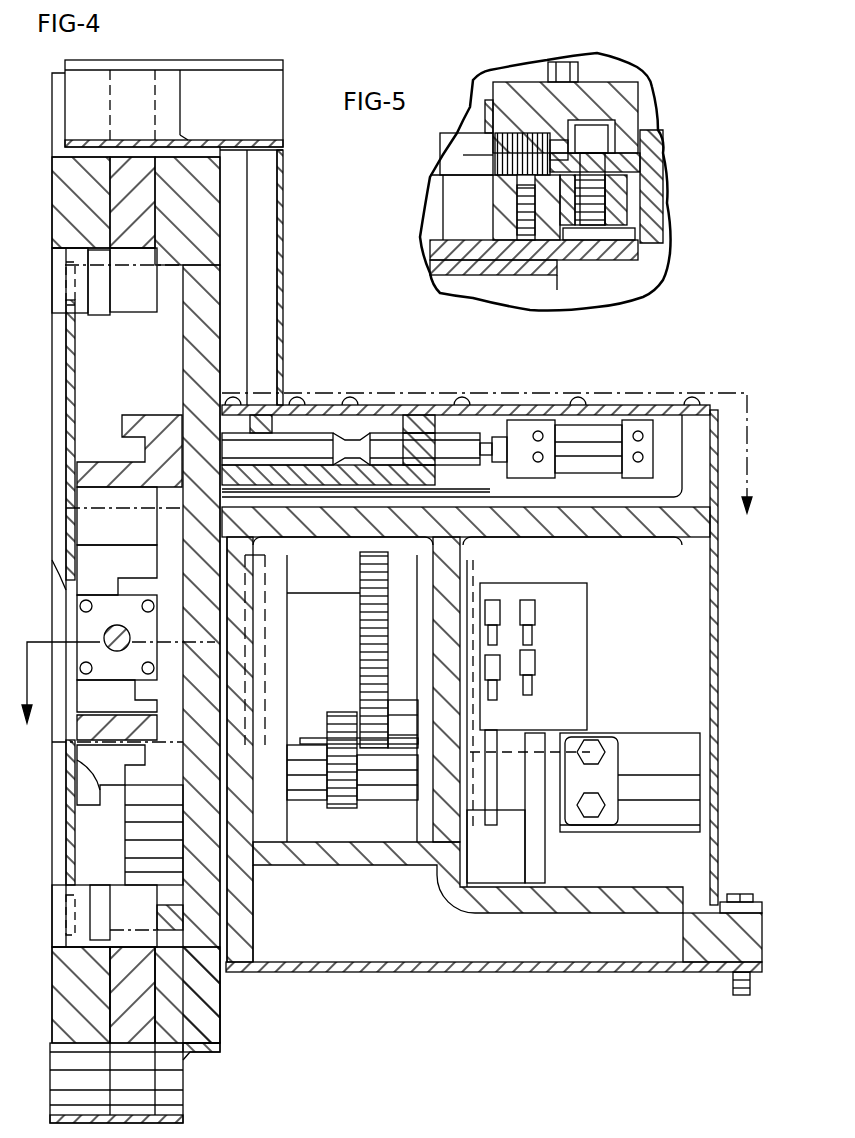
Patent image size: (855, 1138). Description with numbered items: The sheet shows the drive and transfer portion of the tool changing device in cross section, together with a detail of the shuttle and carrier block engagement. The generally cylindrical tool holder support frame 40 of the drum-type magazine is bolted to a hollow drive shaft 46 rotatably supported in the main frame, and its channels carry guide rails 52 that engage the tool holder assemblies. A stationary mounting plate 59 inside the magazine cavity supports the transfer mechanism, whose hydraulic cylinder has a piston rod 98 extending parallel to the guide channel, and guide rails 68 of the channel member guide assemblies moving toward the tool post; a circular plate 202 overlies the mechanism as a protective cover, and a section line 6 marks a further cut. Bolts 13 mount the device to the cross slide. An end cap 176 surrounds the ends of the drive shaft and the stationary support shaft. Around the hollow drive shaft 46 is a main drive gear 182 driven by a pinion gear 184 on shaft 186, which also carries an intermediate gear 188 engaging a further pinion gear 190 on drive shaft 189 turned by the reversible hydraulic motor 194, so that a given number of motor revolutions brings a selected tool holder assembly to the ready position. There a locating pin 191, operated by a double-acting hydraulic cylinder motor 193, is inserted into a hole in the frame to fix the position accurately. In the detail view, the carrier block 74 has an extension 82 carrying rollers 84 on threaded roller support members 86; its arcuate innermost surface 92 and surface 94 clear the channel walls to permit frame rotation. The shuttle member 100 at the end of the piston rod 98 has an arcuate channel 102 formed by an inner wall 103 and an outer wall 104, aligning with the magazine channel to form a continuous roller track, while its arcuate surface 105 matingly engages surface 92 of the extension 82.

In FIG. 4, the tool holder support frame 40 is at (222, 238).
In FIG. 4, the guide rails 52 is at (110, 318).
In FIG. 4, the mounting plate 59 is at (130, 422).
In FIG. 4, the guide rails 68 is at (75, 555).
In FIG. 4, the piston rod 98 is at (104, 630).
In FIG. 5, the piston rod 98 is at (470, 147).
In FIG. 4, the circular plate 202 is at (68, 410).
In FIG. 4, the section line 6- 6 is at (388, 573).
In FIG. 4, the bolts 13 is at (733, 982).
In FIG. 4, the hollow drive shaft 46 is at (333, 612).
In FIG. 4, the end cap 176 is at (572, 640).
In FIG. 4, the main drive gear 182 is at (363, 572).
In FIG. 4, the pinion gear 184 is at (372, 745).
In FIG. 4, the shaft 186 is at (320, 750).
In FIG. 4, the intermediate gear 188 is at (338, 728).
In FIG. 4, the drive shaft 189 is at (410, 783).
In FIG. 4, the pinion gear 190 is at (350, 795).
In FIG. 4, the locating pin 191 is at (320, 440).
In FIG. 4, the hydraulic cylinder motor 193 is at (595, 435).
In FIG. 4, the hydraulic motor 194 is at (683, 748).
In FIG. 5, the carrier block 74 is at (655, 253).
In FIG. 5, the extension 82 is at (623, 197).
In FIG. 5, the rollers 84 is at (597, 137).
In FIG. 5, the roller support member 86 is at (610, 227).
In FIG. 5, the innermost surface 92 is at (573, 233).
In FIG. 5, the surface 94 is at (637, 187).
In FIG. 5, the shuttle member 100 is at (500, 102).
In FIG. 5, the arcuate channel 102 is at (597, 163).
In FIG. 5, the inner wall 103 is at (547, 120).
In FIG. 5, the outer wall 104 is at (622, 100).
In FIG. 5, the surface 105 is at (552, 217).